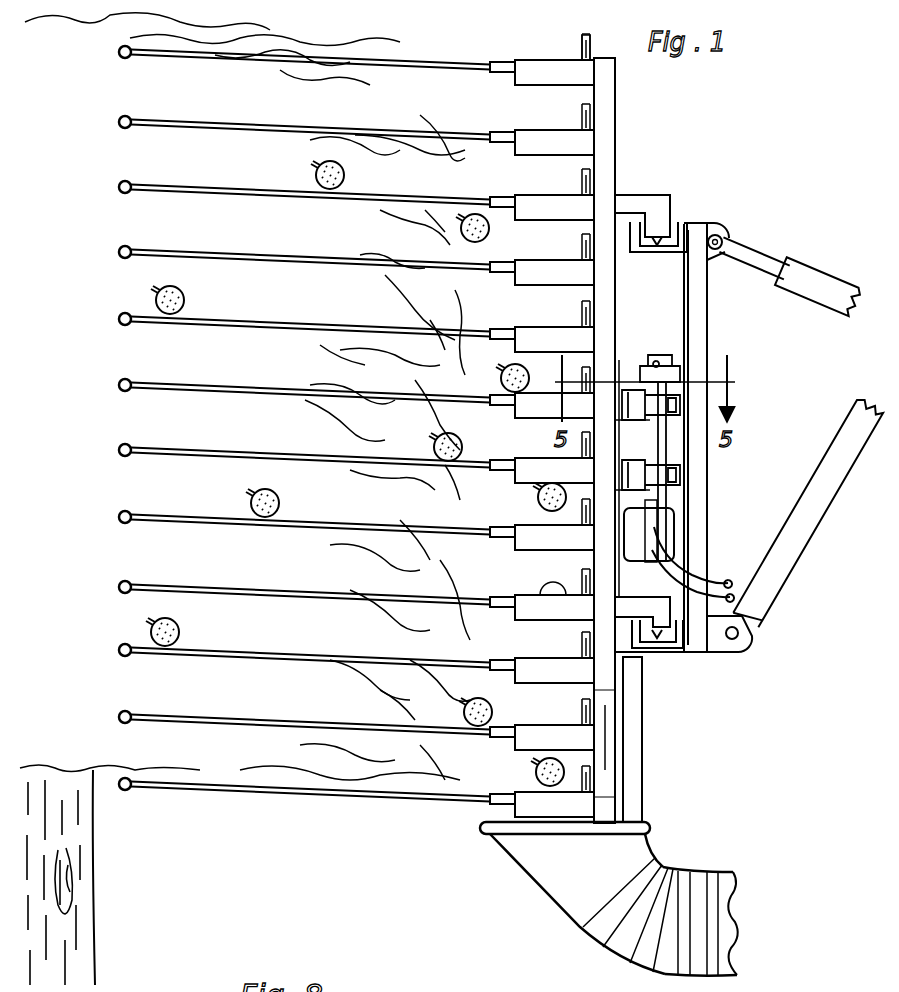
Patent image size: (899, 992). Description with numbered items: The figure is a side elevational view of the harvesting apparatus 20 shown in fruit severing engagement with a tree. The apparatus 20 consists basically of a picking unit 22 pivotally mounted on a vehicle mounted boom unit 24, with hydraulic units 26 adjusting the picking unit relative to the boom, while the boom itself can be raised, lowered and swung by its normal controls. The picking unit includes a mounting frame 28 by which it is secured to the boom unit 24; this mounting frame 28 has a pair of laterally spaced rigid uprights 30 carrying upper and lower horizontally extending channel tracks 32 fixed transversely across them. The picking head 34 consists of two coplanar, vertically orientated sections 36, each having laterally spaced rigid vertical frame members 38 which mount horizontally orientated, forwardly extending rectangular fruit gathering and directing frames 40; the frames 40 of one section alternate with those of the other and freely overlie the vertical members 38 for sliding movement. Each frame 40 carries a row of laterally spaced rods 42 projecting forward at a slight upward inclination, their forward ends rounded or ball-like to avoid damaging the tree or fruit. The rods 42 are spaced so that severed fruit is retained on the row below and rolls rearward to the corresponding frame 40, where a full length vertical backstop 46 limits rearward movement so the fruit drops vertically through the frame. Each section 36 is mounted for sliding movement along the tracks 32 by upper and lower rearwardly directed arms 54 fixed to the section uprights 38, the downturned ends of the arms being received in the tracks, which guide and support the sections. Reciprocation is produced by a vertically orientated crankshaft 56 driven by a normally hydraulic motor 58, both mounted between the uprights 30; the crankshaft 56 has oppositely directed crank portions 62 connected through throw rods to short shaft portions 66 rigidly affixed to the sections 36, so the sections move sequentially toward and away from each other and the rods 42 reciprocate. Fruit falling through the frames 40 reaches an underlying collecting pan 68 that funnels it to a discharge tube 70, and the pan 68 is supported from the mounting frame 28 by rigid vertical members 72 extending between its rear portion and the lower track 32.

The harvesting apparatus 20 is at (738, 213).
The picking unit 22 is at (636, 143).
The boom unit 24 is at (813, 542).
The hydraulic unit 26 is at (790, 262).
The mounting frame 28 is at (718, 352).
The rigid upright 30 is at (690, 544).
The channel track 32 is at (640, 254).
The picking head 34 is at (538, 52).
The section 36 is at (607, 690).
The vertical frame member 38 is at (605, 767).
The fruit gathering and directing frame 40 is at (540, 617).
The rod 42 is at (293, 655).
The vertical backstop 46 is at (580, 243).
The rearwardly directed arm 54 is at (648, 206).
The crankshaft 56 is at (676, 448).
The motor 58 is at (682, 522).
The crank portion 62 is at (680, 480).
The short shaft portion 66 is at (634, 368).
The collecting pan 68 is at (525, 850).
The discharge tube 70 is at (700, 870).
The rigid vertical member 72 is at (632, 778).